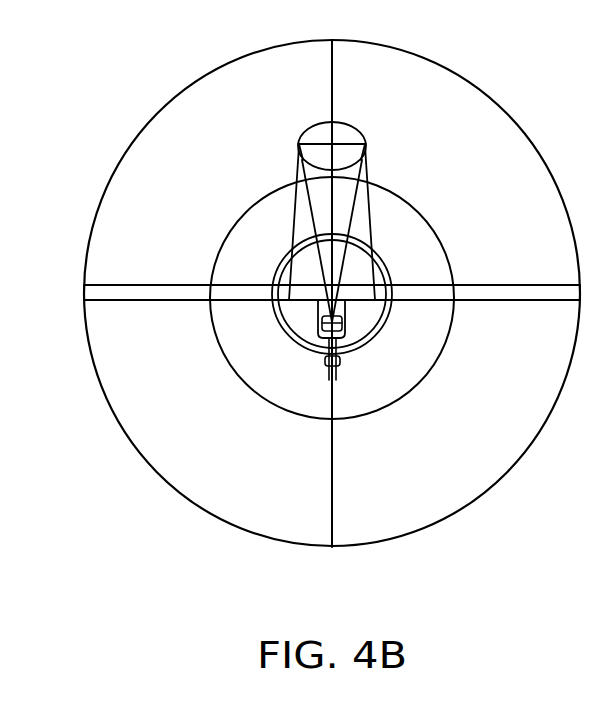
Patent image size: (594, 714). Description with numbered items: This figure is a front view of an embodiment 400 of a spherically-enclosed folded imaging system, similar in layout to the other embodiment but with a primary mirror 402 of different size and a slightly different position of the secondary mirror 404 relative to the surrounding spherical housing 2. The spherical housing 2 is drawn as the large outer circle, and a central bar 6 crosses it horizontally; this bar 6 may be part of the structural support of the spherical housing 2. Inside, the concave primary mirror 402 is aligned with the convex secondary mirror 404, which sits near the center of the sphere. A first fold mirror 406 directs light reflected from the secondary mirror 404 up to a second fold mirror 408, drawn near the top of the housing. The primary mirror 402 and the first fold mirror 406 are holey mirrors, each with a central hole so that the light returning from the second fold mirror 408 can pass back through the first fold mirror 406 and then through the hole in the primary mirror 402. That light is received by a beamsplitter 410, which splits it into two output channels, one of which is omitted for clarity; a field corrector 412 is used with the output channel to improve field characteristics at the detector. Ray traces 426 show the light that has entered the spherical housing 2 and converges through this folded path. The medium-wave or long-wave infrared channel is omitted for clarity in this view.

The spherical housing 2 is at (192, 83).
The central bar 6 is at (545, 285).
The three-channel spherically-enclosed folded imaging system 400 is at (358, 599).
The concave primary mirror 402 is at (295, 414).
The convex secondary mirror 404 is at (315, 347).
The first fold mirror 406 is at (356, 346).
The second fold mirror 408 is at (348, 122).
The beamsplitter 410 is at (317, 330).
The field corrector 412 is at (337, 370).
The ray traces 426 is at (300, 198).